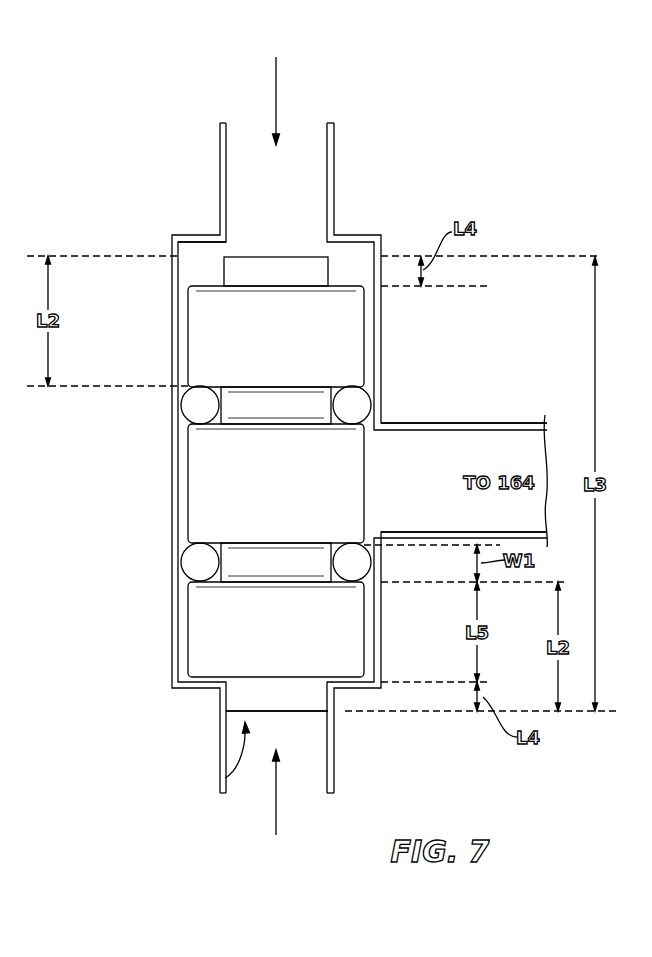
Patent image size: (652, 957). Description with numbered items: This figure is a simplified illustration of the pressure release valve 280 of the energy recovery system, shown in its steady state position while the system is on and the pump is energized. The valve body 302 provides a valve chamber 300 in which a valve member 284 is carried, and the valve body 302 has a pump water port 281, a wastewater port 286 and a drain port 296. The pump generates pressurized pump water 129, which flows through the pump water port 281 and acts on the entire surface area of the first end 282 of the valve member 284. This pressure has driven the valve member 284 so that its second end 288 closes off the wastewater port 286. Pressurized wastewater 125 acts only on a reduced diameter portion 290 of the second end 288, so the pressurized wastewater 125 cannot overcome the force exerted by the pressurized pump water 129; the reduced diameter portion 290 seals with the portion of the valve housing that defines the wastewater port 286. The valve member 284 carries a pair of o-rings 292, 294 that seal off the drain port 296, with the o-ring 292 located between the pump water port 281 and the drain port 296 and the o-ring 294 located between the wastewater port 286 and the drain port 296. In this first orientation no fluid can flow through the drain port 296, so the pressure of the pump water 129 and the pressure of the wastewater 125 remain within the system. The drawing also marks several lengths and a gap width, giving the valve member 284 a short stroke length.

The pressurized pump water 129 is at (277, 95).
The pressurized wastewater 125 is at (277, 805).
The pressure release valve 280 is at (157, 187).
The pump water port 281 is at (300, 232).
The first end of valve member 282 is at (263, 257).
The valve member 284 is at (345, 330).
The wastewater port 286 is at (225, 778).
The second end of valve member 288 is at (305, 712).
The reduced diameter portion 290 is at (261, 712).
The o-ring 292 is at (350, 405).
The o-ring 294 is at (354, 555).
The drain port 296 is at (387, 461).
The valve chamber 300 is at (195, 262).
The valve body 302 is at (172, 327).